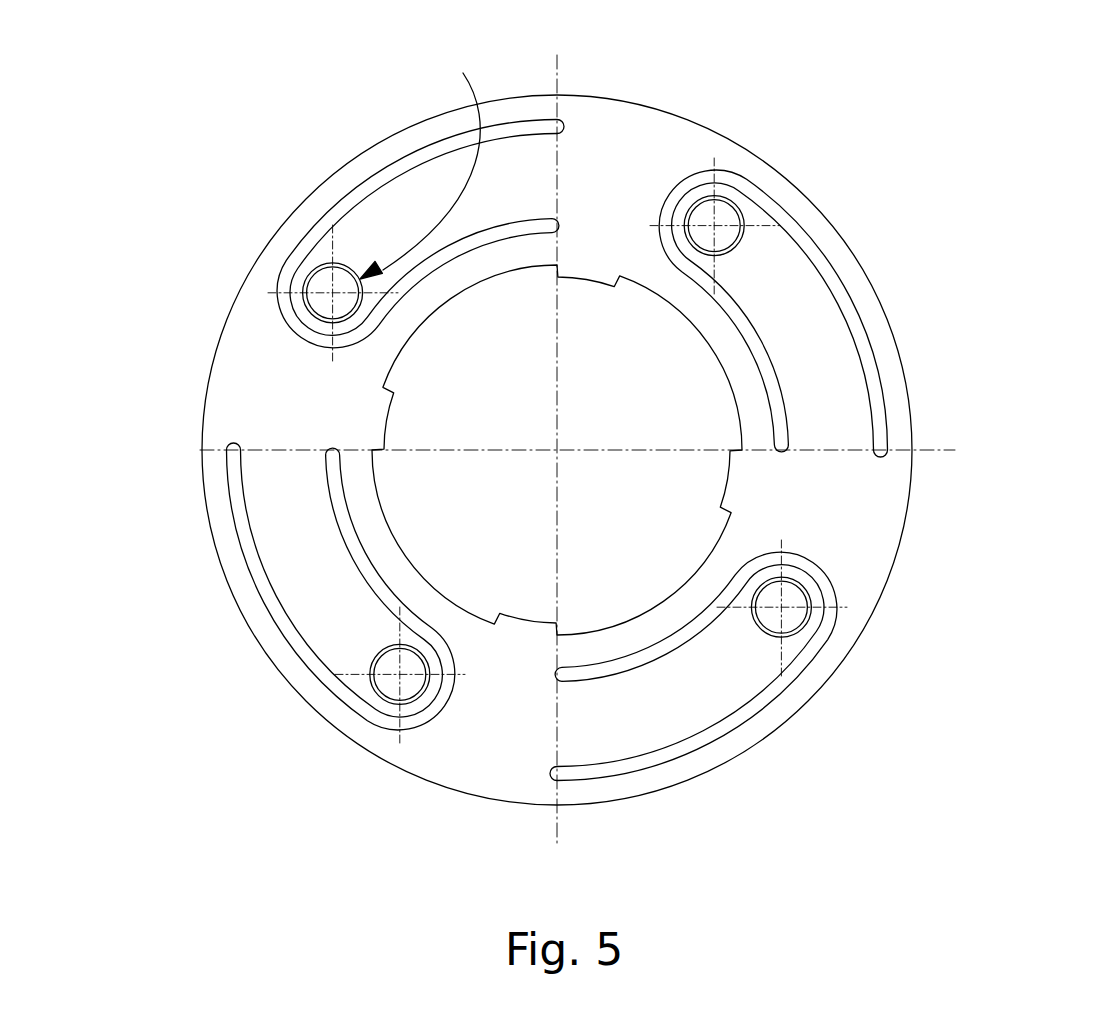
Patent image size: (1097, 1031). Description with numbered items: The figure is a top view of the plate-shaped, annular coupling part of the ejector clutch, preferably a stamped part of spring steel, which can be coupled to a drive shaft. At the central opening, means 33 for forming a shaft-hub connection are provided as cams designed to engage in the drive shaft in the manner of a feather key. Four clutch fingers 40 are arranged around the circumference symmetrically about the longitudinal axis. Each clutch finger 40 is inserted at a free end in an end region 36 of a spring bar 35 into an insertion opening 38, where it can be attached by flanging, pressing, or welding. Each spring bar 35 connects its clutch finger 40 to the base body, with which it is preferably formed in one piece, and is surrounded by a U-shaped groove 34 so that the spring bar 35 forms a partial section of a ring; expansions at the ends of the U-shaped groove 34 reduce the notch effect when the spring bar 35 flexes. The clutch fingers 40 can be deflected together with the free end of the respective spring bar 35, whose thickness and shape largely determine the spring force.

The means for forming a shaft-hub connection 33 is at (592, 278).
The U-shaped groove 34 is at (312, 203).
The spring bar 35 is at (405, 218).
The end region 36 is at (297, 293).
The insertion opening 38 is at (283, 322).
The clutch finger 40 is at (422, 157).